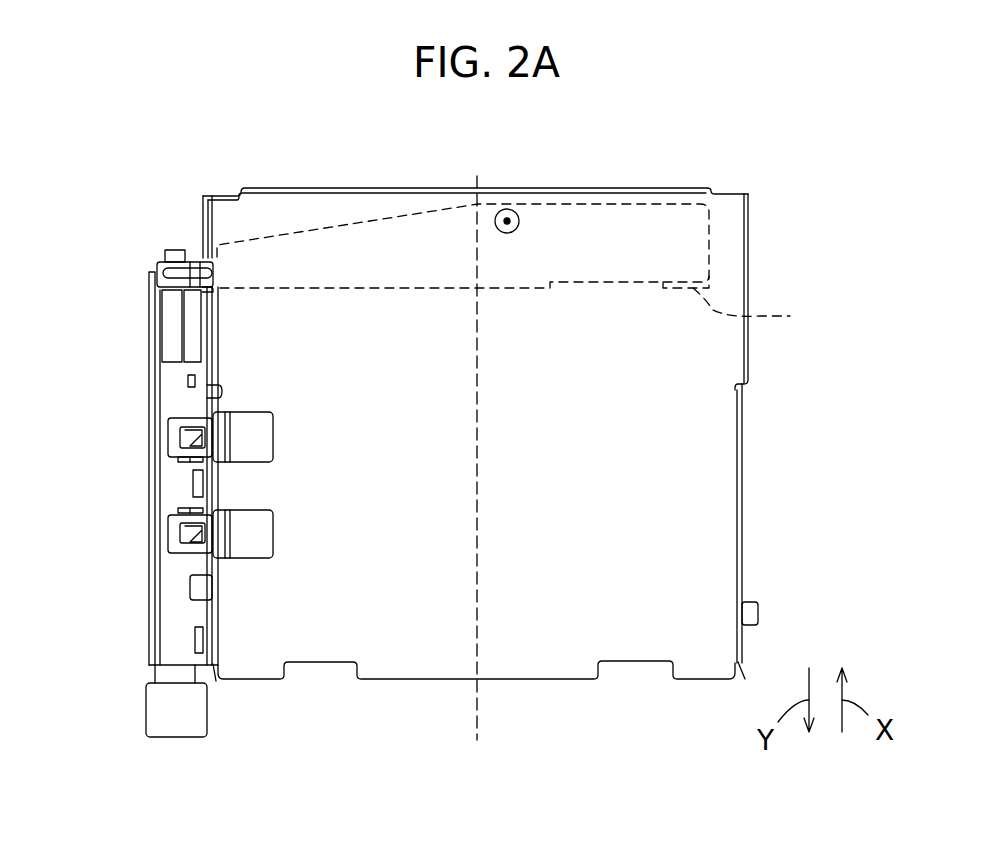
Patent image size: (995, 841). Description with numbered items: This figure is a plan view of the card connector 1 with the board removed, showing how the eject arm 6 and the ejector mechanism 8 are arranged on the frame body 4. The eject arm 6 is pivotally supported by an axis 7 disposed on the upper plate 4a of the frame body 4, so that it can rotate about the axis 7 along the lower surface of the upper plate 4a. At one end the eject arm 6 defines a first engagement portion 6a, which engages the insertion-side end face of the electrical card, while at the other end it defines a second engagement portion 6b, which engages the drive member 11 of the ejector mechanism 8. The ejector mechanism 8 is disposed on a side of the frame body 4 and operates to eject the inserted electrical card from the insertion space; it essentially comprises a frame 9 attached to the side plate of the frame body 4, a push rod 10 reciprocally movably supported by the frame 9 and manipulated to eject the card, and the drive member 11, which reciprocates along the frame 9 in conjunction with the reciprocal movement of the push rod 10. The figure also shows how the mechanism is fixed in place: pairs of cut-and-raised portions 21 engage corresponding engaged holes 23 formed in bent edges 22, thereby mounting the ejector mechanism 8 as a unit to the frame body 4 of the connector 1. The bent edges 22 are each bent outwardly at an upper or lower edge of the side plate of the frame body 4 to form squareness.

The connector 1 is at (752, 437).
The frame body 4 is at (717, 535).
The upper plate 4a is at (720, 473).
The eject arm 6 is at (386, 218).
The first engagement portion 6a is at (764, 310).
The second engagement portion 6b is at (158, 258).
The axis 7 is at (507, 221).
The ejector mechanism 8 is at (137, 476).
The frame 9 is at (163, 637).
The push rod 10 is at (157, 707).
The drive member 11 is at (173, 250).
The cut-and-raised portions 21 is at (183, 435).
The bent edges 22 is at (175, 420).
The engaged holes 23 is at (193, 432).